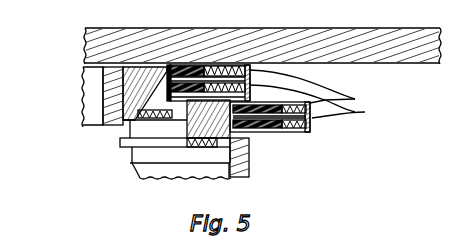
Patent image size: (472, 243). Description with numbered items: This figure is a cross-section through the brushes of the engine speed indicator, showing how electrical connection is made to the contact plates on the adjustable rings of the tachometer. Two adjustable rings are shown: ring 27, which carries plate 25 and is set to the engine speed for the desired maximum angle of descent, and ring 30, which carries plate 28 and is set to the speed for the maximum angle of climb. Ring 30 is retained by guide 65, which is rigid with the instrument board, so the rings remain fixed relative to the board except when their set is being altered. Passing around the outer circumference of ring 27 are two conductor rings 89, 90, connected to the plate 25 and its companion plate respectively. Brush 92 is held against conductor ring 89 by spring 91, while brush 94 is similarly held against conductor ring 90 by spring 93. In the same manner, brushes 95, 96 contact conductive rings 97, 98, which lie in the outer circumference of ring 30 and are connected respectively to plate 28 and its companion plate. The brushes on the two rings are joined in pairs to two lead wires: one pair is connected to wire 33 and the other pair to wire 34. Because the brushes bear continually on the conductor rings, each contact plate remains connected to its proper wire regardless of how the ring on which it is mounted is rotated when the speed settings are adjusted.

The ring 30 is at (105, 75).
The guide 65 is at (110, 100).
The conductive ring 97 is at (158, 72).
The conductive ring 98 is at (190, 68).
The brush 96 is at (216, 79).
The brush 95 is at (243, 72).
The plate 28 is at (157, 118).
The ring 27 is at (195, 128).
The plate 25 is at (195, 146).
The conductor ring 89 is at (252, 133).
The conductor ring 90 is at (250, 134).
The brush 92 is at (286, 133).
The brush 94 is at (287, 134).
The spring 91 is at (321, 123).
The spring 93 is at (315, 132).
The wire 33 is at (355, 98).
The wire 34 is at (365, 112).